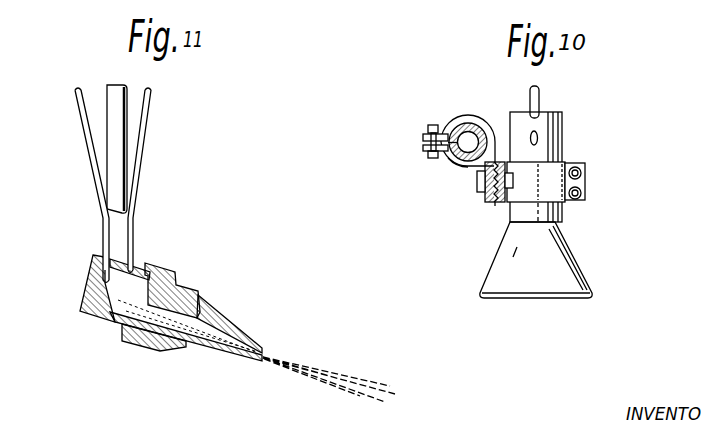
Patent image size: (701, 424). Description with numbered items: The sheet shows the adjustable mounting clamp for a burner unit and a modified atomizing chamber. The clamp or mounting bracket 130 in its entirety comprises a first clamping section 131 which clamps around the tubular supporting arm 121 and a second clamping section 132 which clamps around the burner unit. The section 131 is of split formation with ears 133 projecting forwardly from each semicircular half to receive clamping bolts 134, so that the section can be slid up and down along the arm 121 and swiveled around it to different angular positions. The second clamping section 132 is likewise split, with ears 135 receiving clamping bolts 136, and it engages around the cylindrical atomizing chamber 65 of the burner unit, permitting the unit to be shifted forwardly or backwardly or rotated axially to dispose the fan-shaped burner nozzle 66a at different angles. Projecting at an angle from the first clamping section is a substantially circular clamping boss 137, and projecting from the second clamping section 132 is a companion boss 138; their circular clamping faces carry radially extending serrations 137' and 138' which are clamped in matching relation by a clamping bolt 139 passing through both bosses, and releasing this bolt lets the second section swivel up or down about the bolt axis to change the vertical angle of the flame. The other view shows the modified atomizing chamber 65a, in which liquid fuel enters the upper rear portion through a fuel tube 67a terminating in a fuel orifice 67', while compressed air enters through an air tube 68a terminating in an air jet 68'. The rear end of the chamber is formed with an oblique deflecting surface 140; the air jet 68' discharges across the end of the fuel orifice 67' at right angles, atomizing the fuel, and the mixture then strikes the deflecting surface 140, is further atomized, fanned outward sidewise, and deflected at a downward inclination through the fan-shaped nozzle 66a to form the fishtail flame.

In FIG. 11, the supporting arm 121 is at (114, 97).
In FIG. 10, the supporting arm 121 is at (469, 126).
In FIG. 11, the fuel tube 67a is at (87, 138).
In FIG. 11, the air tube 68a is at (148, 138).
In FIG. 11, the fuel orifice 67' is at (74, 270).
In FIG. 11, the air jet 68' is at (172, 275).
In FIG. 11, the oblique deflecting surface 140 is at (86, 291).
In FIG. 11, the atomizing chamber 65a is at (116, 314).
In FIG. 11, the second clamping section 132 is at (142, 343).
In FIG. 10, the second clamping section 132 is at (566, 160).
In FIG. 11, the fan-shaped burner nozzle 66a is at (230, 333).
In FIG. 10, the fan-shaped burner nozzle 66a is at (567, 273).
In FIG. 10, the cylindrical atomizing chamber 65 is at (556, 126).
In FIG. 10, the clamp or mounting bracket 130 is at (496, 113).
In FIG. 10, the first clamping section 131 is at (455, 163).
In FIG. 10, the ears 133 is at (424, 148).
In FIG. 10, the clamping bolts 134 is at (432, 125).
In FIG. 10, the ears 135 is at (585, 172).
In FIG. 10, the clamping bolts 136 is at (585, 193).
In FIG. 10, the clamping boss 137 is at (458, 186).
In FIG. 10, the radially extending serrations 137' is at (472, 200).
In FIG. 10, the companion boss 138 is at (516, 172).
In FIG. 10, the radially extending serrations 138' is at (465, 228).
In FIG. 10, the clamping bolt 139 is at (516, 186).